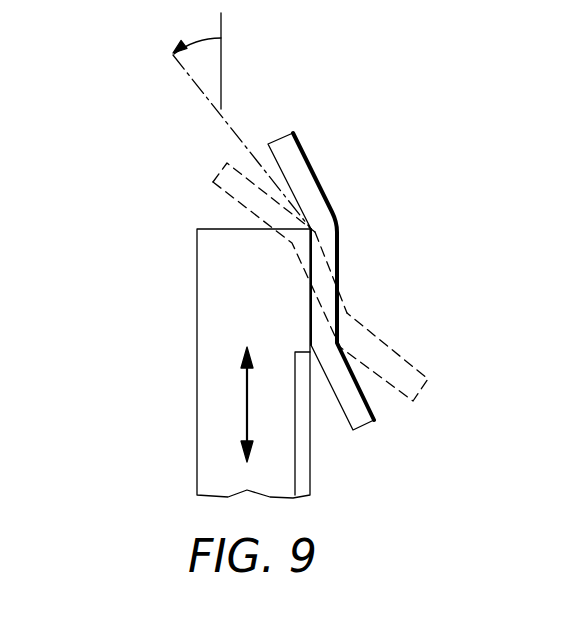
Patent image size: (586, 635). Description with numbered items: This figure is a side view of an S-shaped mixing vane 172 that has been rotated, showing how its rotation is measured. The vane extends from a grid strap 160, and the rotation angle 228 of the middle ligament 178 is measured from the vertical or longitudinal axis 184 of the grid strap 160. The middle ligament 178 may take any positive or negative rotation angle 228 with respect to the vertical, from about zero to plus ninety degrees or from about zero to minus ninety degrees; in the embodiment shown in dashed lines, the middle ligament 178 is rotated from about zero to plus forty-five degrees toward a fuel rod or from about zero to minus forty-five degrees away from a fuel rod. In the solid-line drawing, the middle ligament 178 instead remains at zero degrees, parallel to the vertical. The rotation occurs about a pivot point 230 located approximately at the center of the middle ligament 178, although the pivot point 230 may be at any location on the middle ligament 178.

The grid strap 160 is at (190, 268).
The S-shaped mixing vane 172 is at (346, 235).
The middle ligament 178 is at (333, 257).
The vertical or longitudinal axis 184 is at (247, 404).
The rotation angle 228 is at (212, 58).
The pivot point 230 is at (323, 285).